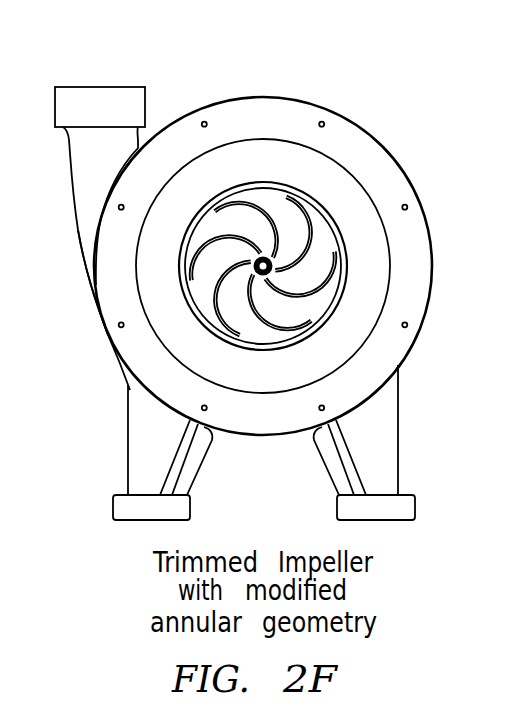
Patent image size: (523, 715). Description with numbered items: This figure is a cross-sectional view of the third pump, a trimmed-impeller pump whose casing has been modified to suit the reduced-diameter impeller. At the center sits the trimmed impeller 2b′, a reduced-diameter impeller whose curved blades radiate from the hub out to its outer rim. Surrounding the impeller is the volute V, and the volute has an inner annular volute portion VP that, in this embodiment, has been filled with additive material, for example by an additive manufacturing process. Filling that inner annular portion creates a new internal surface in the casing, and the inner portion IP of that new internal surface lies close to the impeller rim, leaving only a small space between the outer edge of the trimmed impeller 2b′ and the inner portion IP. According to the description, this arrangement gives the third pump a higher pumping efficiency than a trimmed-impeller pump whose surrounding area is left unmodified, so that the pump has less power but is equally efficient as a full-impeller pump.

The trimmed impeller 2b′ is at (242, 302).
The volute V is at (118, 219).
The inner portion of the new internal surface IP is at (186, 262).
The inner annular volute portion VP is at (145, 304).